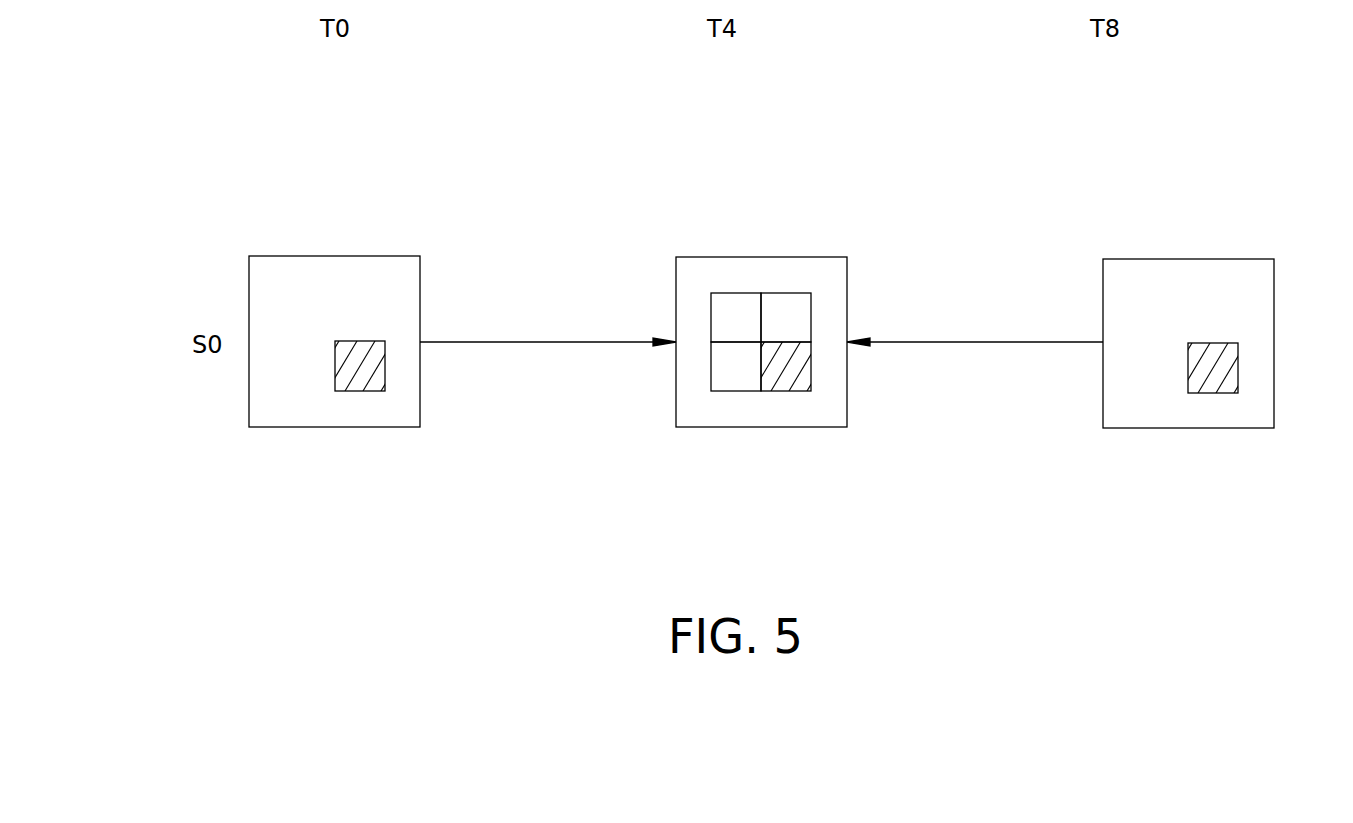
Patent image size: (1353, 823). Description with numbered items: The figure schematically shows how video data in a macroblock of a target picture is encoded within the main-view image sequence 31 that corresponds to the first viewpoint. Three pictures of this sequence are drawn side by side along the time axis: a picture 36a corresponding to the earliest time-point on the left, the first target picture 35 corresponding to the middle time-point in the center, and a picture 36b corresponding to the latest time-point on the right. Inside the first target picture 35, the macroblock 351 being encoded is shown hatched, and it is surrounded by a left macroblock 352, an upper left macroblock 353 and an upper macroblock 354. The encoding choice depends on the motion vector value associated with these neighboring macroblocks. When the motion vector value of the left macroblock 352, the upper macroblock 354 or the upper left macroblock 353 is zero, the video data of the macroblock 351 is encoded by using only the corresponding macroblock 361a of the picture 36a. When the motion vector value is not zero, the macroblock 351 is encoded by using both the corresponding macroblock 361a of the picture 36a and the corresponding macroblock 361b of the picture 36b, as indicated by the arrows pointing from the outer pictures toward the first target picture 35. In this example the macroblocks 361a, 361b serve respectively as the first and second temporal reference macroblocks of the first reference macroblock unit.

The main-view image sequence 31 is at (285, 352).
The first target picture 35 is at (792, 346).
The macroblock of the first target picture 351 is at (784, 392).
The left macroblock 352 is at (737, 391).
The upper left macroblock 353 is at (734, 293).
The upper macroblock 354 is at (787, 293).
The picture corresponding to time-point T0 36a is at (359, 352).
The picture corresponding to time-point T8 36b is at (1214, 354).
The corresponding macroblock of the T0 picture 361a is at (357, 391).
The corresponding macroblock of the T8 picture 361b is at (1213, 393).